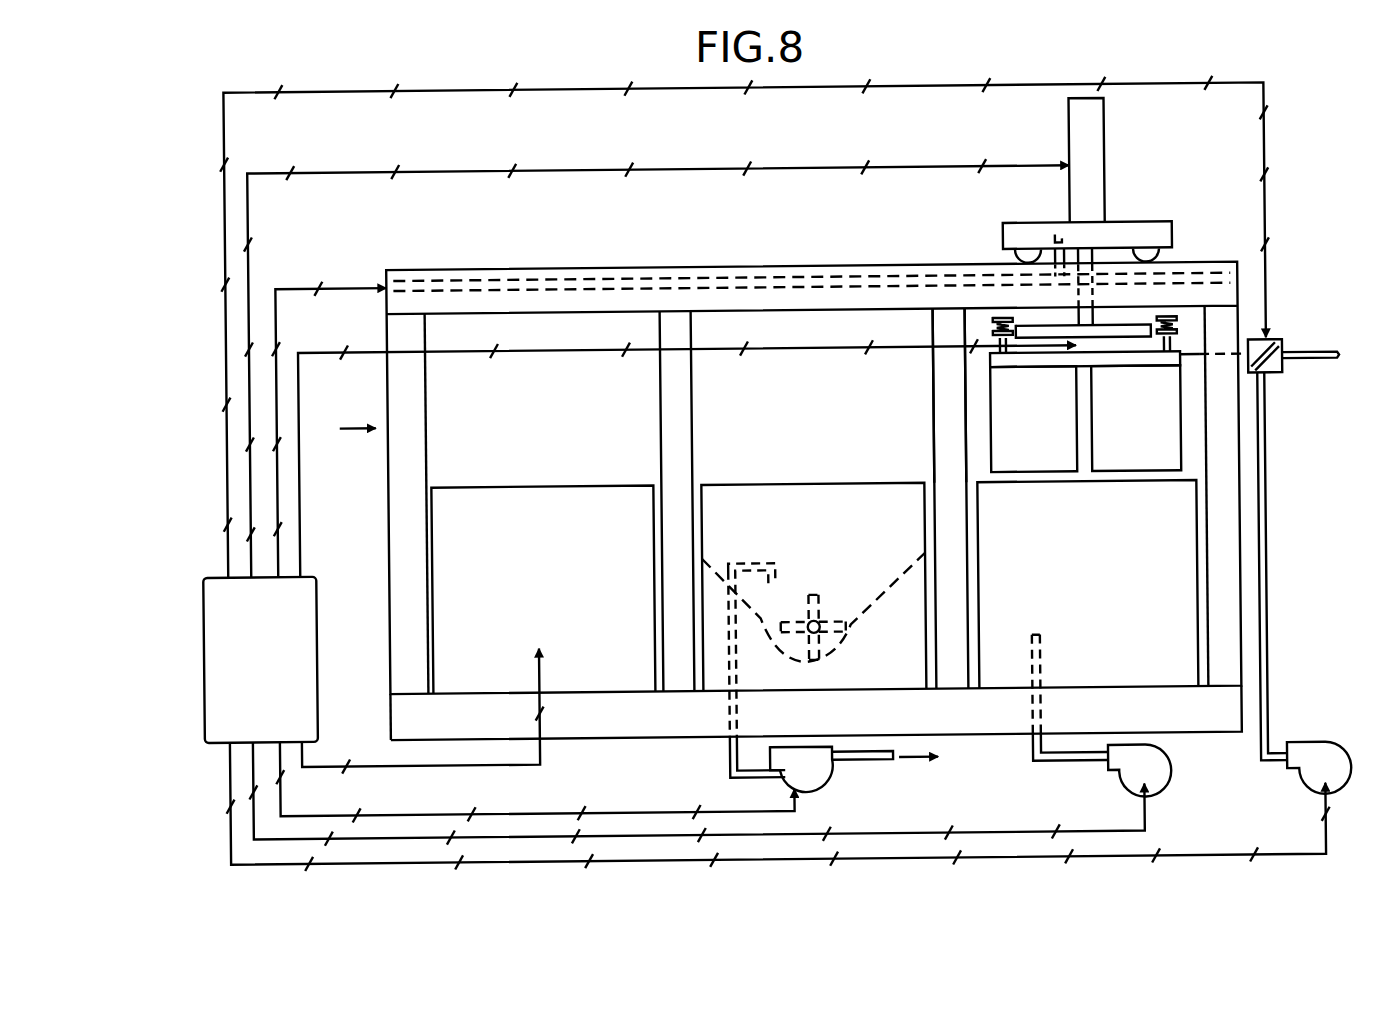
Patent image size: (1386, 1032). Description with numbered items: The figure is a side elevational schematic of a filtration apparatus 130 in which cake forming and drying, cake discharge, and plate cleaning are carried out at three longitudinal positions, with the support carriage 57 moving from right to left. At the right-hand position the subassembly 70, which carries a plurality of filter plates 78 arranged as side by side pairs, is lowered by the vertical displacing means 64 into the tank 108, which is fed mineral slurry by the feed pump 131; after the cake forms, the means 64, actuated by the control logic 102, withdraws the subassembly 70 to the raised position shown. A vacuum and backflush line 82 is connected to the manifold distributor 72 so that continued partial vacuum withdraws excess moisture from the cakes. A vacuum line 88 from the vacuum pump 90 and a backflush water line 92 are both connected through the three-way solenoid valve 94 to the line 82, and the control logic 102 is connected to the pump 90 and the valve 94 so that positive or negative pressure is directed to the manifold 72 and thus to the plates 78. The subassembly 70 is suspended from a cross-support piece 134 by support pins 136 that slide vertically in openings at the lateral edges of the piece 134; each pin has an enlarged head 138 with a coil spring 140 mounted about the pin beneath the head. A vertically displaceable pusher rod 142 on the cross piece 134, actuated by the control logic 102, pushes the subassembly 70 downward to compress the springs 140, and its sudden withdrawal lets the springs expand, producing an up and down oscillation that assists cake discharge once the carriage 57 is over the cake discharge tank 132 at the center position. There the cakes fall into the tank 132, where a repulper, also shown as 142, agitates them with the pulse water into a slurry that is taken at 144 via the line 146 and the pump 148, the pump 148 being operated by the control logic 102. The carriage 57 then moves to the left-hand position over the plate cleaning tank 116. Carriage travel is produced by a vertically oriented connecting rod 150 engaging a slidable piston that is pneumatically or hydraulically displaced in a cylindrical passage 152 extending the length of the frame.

The support carriage 57 is at (1157, 214).
The vertical displacing means 64 is at (1108, 153).
The subassembly 70 is at (985, 406).
The manifold distributor 72 is at (1000, 360).
The filter plates 78 is at (1085, 418).
The vacuum and backflush line 82 is at (1225, 366).
The vacuum line 88 is at (1270, 610).
The vacuum pump 90 is at (1326, 750).
The backflush water line 92 is at (1328, 364).
The solenoid valve 94 is at (1283, 378).
The control logic 102 is at (215, 688).
The tank 108 is at (1188, 578).
The plate cleaning tank 116 is at (566, 500).
The apparatus 130 is at (410, 243).
The feed pump 131 is at (1150, 784).
The cake discharge tank 132 is at (760, 490).
The cross-support piece 134 is at (1113, 332).
The support pins 136 is at (1174, 350).
The enlarged heads 138 is at (1178, 330).
The coil springs 140 is at (1003, 321).
The pusher rod 142 is at (832, 636).
The discharge product take-off 144 is at (872, 761).
The line 146 is at (722, 750).
The pump 148 is at (808, 790).
The connecting rod 150 is at (1056, 236).
The cylindrical passage 152 is at (570, 282).